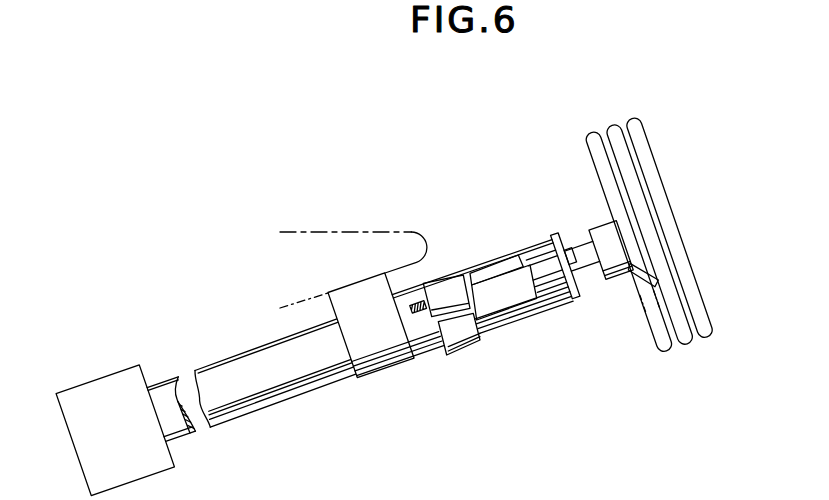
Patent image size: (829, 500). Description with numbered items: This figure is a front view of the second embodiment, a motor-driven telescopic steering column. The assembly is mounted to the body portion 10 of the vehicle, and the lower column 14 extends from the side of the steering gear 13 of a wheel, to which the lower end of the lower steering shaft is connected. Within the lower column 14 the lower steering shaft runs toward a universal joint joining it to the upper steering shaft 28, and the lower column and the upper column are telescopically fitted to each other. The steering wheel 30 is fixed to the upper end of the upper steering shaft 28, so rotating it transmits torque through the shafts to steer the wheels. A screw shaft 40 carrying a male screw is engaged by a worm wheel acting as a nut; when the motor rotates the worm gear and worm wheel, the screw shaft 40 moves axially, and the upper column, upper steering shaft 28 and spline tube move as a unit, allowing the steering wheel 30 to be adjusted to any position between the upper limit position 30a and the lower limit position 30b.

The body portion 10 is at (358, 230).
The steering gear 13 is at (125, 443).
The lower column 14 is at (292, 398).
The upper steering shaft 28 is at (586, 256).
The steering wheel 30 is at (612, 127).
The upper limit position 30a is at (703, 293).
The lower limit position 30b is at (642, 289).
The screw shaft 40 is at (498, 280).